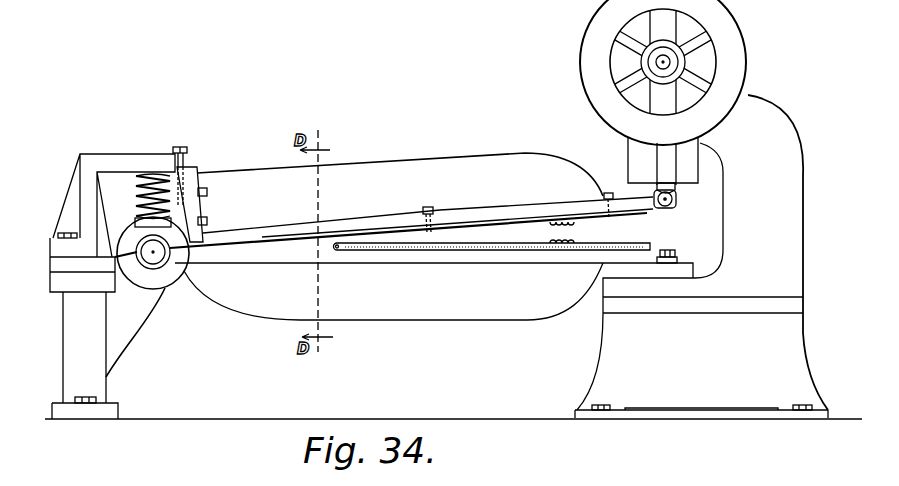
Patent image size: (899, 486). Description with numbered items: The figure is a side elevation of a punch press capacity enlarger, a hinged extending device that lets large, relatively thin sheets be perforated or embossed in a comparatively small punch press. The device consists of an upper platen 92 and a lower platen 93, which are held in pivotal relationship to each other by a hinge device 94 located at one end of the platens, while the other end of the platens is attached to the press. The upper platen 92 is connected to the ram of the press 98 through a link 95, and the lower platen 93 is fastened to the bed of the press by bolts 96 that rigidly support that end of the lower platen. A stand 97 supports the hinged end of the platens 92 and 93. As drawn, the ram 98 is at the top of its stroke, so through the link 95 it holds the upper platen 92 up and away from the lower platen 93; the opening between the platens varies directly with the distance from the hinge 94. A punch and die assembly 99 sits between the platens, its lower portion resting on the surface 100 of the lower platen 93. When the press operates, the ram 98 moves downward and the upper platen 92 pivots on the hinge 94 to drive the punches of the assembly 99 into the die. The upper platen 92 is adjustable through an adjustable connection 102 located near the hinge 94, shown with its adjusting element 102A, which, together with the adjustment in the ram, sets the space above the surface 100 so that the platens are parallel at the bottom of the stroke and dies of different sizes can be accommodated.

The upper platen 92 is at (458, 173).
The lower platen 93 is at (499, 312).
The hinge device 94 is at (173, 284).
The link 95 is at (676, 199).
The bolts 96 is at (676, 250).
The stand 97 is at (93, 375).
The ram of the press 98 is at (660, 158).
The punch and die assembly 99 is at (465, 246).
The surface 100 is at (261, 233).
The adjustable connection 102 is at (195, 168).
The adjusting screw 102A is at (176, 146).